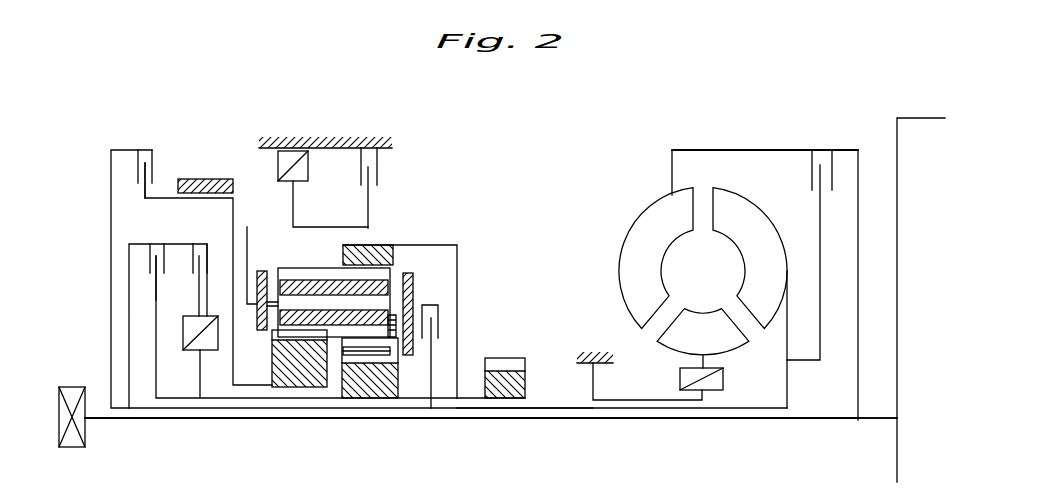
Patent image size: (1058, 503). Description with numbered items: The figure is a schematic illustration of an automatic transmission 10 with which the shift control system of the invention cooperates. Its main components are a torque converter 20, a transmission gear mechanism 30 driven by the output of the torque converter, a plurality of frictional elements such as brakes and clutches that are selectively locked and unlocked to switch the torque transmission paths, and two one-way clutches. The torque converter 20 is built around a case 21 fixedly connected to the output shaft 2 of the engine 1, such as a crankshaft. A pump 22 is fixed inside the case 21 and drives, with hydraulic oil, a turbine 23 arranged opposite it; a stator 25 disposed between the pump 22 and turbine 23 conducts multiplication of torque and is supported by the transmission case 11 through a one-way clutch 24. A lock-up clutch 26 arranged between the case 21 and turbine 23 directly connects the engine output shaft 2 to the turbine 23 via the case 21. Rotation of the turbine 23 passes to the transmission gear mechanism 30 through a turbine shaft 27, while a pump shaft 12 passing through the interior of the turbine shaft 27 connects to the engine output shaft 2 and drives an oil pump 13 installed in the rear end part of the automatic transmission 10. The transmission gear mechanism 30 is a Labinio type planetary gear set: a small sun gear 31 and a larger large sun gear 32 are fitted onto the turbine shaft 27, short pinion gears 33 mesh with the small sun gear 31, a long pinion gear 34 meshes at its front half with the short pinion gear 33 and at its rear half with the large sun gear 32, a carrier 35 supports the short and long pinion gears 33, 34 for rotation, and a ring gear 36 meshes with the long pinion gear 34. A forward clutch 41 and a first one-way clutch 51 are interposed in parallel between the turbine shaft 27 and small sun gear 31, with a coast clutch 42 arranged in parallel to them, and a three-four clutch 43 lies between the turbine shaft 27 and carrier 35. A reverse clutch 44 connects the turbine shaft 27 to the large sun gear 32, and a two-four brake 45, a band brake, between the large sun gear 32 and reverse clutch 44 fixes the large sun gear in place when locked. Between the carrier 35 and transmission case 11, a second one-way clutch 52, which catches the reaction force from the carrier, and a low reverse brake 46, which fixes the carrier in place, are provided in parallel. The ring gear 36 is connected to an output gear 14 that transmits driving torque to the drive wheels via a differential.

The engine 1 is at (911, 110).
The output shaft 2 is at (877, 417).
The automatic transmission 10 is at (831, 126).
The transmission case 11 is at (330, 137).
The pump shaft 12 is at (163, 420).
The oil pump 13 is at (75, 386).
The output gear 14 is at (503, 358).
The torque converter 20 is at (652, 176).
The case 21 is at (745, 150).
The pump 22 is at (636, 216).
The turbine 23 is at (748, 210).
The one-way clutch 24 is at (723, 379).
The stator 25 is at (703, 312).
The lock-up clutch 26 is at (834, 174).
The turbine shaft 27 is at (551, 408).
The transmission gear mechanism 30 is at (456, 228).
The small sun gear 31 is at (373, 399).
The large sun gear 32 is at (292, 388).
The short pinion gears 33 is at (391, 356).
The long pinion gear 34 is at (303, 268).
The carrier 35 is at (408, 272).
The ring gear 36 is at (386, 245).
The forward clutch 41 is at (206, 244).
The coast clutch 42 is at (160, 244).
The 3-4 clutch 43 is at (432, 305).
The reverse clutch 44 is at (155, 158).
The 2-4 brake 45 is at (216, 178).
The low reverse brake 46 is at (378, 173).
The first one-way clutch 51 is at (187, 315).
The second one-way clutch 52 is at (308, 166).